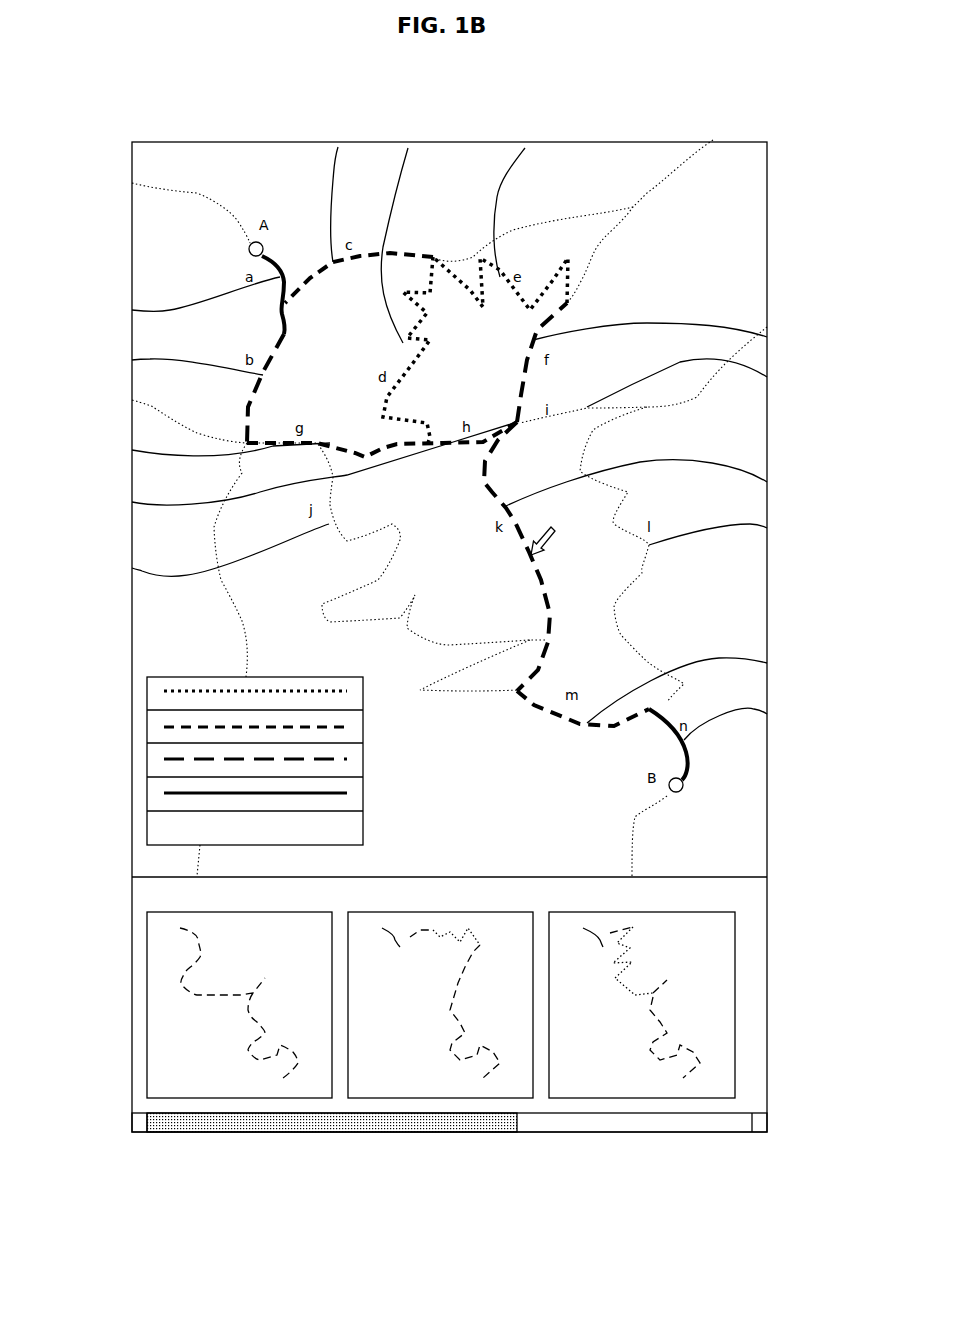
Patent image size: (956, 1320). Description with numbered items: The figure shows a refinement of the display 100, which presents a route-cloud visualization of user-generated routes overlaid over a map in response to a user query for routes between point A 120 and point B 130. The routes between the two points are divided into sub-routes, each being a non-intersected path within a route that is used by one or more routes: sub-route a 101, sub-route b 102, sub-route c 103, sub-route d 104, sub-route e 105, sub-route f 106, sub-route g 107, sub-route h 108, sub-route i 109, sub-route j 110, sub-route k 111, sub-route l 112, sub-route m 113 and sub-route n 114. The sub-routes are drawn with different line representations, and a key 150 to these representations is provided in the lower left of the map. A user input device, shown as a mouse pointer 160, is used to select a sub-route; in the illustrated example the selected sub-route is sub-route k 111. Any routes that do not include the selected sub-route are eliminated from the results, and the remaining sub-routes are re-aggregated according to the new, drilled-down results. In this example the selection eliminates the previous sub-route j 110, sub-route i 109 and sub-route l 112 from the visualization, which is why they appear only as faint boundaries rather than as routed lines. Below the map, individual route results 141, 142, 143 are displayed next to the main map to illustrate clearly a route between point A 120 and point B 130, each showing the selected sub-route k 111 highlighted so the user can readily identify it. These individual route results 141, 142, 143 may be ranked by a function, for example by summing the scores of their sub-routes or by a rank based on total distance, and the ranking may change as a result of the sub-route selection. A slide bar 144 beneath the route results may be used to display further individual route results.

The display 100 is at (162, 142).
The point A 120 is at (249, 253).
The sub-route a 101 is at (132, 310).
The sub-route b 102 is at (132, 360).
The sub-route c 103 is at (338, 147).
The sub-route d 104 is at (408, 148).
The sub-route e 105 is at (525, 148).
The sub-route f 106 is at (767, 337).
The sub-route g 107 is at (132, 450).
The sub-route h 108 is at (132, 502).
The sub-route i 109 is at (767, 377).
The sub-route j 110 is at (132, 568).
The sub-route k 111 is at (767, 482).
The sub-route l 112 is at (767, 528).
The sub-route m 113 is at (767, 663).
The sub-route n 114 is at (767, 714).
The point B 130 is at (683, 785).
The key 150 is at (147, 762).
The mouse pointer 160 is at (553, 533).
The individual route result 141 is at (147, 1013).
The individual route result 142 is at (432, 912).
The individual route result 143 is at (670, 1100).
The slide bar 144 is at (248, 1133).